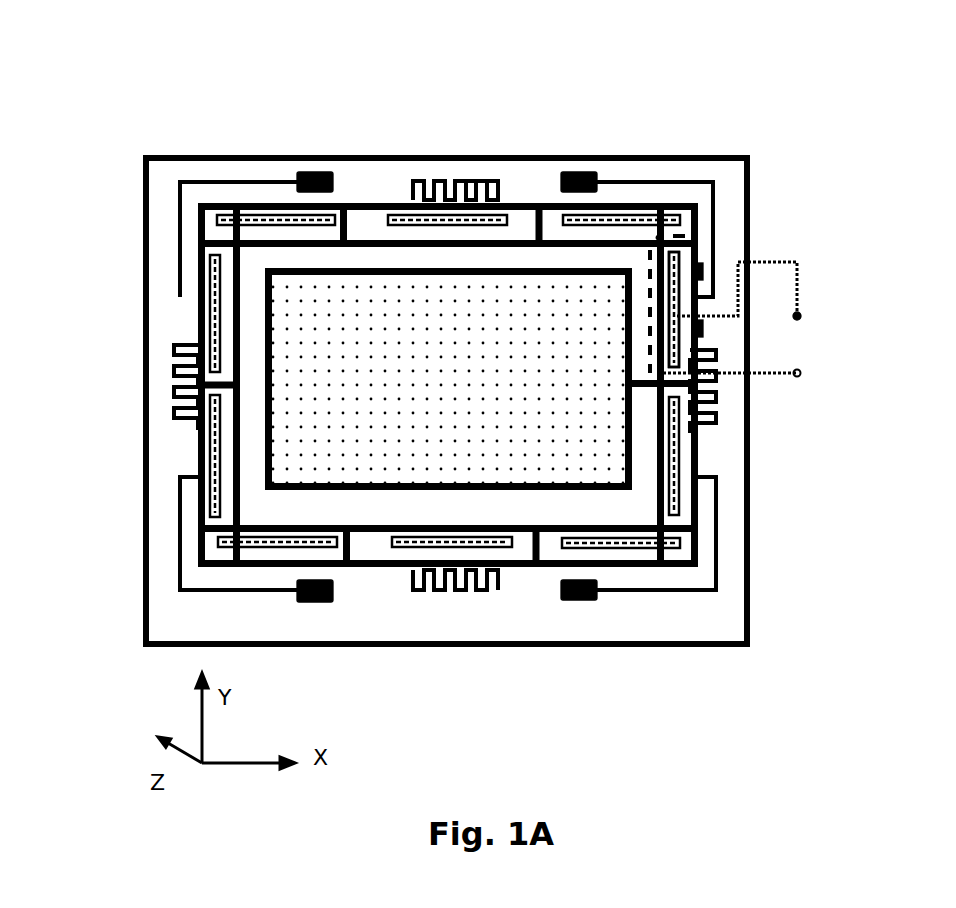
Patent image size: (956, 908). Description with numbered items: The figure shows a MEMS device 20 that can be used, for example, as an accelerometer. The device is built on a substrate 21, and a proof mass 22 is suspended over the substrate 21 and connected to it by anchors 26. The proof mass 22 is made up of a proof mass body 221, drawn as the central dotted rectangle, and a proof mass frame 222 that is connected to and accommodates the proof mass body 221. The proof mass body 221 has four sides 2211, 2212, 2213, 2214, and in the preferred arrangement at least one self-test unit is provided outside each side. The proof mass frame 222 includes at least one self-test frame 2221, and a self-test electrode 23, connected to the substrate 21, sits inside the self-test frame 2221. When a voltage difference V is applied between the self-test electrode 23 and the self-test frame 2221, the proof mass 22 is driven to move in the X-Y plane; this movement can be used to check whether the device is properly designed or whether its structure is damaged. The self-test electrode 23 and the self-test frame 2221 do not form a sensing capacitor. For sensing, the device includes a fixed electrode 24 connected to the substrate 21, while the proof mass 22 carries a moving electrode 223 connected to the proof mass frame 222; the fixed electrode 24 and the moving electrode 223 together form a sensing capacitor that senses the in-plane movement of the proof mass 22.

The MEMS device 20 is at (120, 37).
The substrate 21 is at (638, 155).
The proof mass 22 is at (330, 82).
The proof mass body 221 is at (332, 303).
The side of proof mass body 2211 is at (370, 270).
The side of proof mass body 2212 is at (265, 448).
The side of proof mass body 2213 is at (510, 492).
The side of proof mass body 2214 is at (628, 455).
The proof mass frame 222 is at (263, 202).
The self-test frame 2221 is at (702, 252).
The moving electrode 223 is at (410, 196).
The fixed electrode 24 is at (485, 178).
The anchor 26 is at (577, 170).
The self-test electrode 23 is at (677, 345).